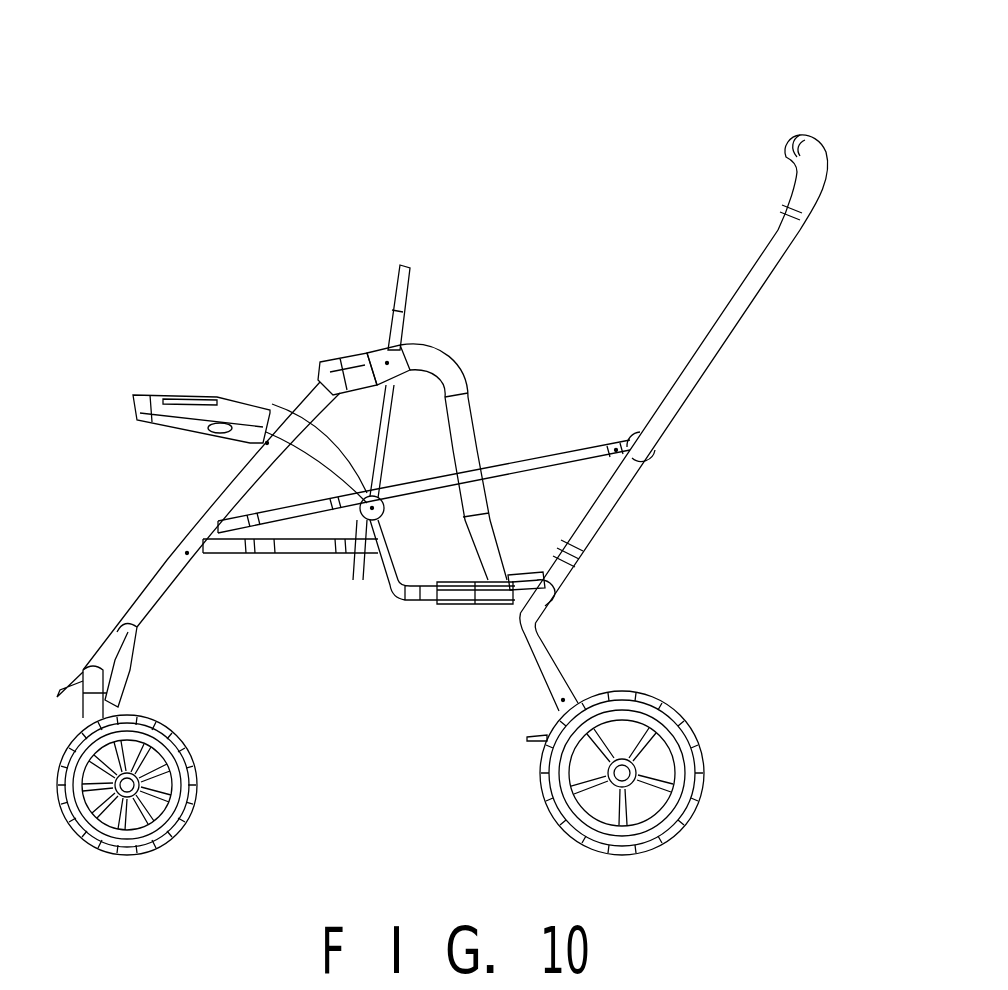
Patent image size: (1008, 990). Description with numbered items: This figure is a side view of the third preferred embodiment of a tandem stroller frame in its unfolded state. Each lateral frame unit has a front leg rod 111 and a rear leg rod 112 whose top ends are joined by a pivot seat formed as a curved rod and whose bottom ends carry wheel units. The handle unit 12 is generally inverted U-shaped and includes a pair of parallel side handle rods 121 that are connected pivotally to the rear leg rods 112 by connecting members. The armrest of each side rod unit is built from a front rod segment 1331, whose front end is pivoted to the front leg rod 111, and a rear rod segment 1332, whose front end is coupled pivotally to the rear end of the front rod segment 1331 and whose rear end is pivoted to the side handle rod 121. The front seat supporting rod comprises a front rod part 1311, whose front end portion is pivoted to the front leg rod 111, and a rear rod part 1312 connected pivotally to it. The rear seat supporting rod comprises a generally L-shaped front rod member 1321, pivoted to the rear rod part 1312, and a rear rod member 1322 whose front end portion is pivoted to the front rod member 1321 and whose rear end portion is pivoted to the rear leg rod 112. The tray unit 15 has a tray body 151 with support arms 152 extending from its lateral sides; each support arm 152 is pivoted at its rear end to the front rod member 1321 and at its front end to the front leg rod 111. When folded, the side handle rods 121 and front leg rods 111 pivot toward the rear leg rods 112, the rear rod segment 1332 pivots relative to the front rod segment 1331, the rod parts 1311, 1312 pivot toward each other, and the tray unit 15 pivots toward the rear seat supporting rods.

The handle unit 12 is at (688, 485).
The side handle rod 121 is at (684, 383).
The rear leg rod 112 is at (497, 552).
The front leg rod 111 is at (137, 613).
The tray unit 15 is at (250, 386).
The tray body 151 is at (210, 397).
The support arm 152 is at (313, 457).
The front rod segment 1331 is at (287, 517).
The rear rod segment 1332 is at (505, 455).
The front rod part 1311 is at (260, 548).
The rear rod part 1312 is at (318, 554).
The front rod member 1321 is at (385, 592).
The rear rod member 1322 is at (478, 597).